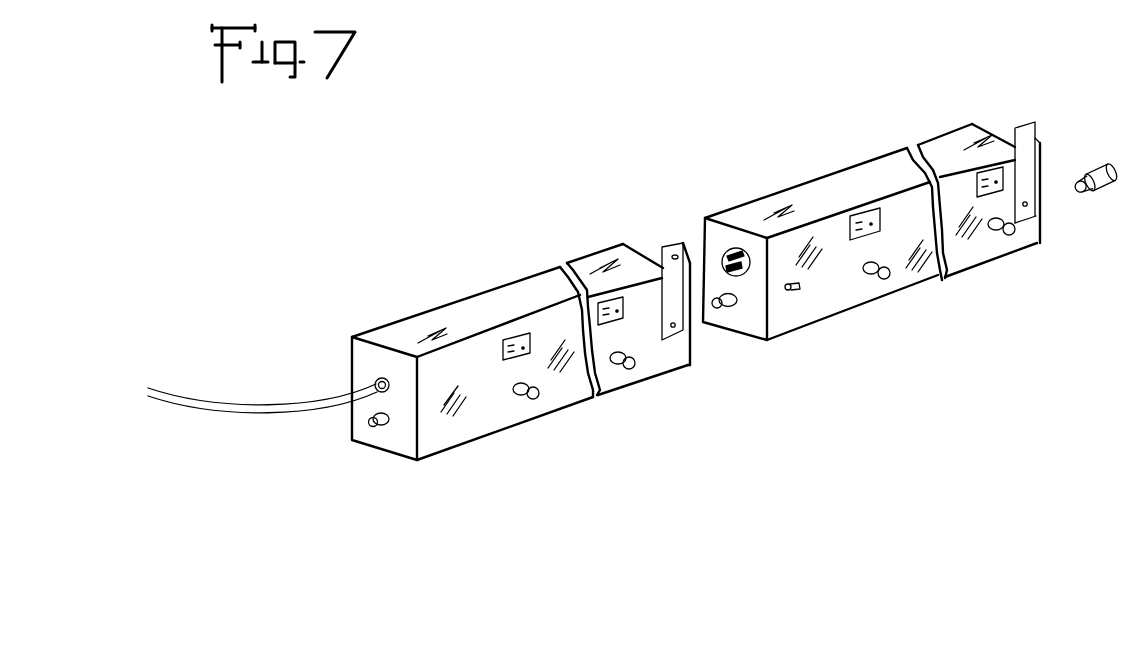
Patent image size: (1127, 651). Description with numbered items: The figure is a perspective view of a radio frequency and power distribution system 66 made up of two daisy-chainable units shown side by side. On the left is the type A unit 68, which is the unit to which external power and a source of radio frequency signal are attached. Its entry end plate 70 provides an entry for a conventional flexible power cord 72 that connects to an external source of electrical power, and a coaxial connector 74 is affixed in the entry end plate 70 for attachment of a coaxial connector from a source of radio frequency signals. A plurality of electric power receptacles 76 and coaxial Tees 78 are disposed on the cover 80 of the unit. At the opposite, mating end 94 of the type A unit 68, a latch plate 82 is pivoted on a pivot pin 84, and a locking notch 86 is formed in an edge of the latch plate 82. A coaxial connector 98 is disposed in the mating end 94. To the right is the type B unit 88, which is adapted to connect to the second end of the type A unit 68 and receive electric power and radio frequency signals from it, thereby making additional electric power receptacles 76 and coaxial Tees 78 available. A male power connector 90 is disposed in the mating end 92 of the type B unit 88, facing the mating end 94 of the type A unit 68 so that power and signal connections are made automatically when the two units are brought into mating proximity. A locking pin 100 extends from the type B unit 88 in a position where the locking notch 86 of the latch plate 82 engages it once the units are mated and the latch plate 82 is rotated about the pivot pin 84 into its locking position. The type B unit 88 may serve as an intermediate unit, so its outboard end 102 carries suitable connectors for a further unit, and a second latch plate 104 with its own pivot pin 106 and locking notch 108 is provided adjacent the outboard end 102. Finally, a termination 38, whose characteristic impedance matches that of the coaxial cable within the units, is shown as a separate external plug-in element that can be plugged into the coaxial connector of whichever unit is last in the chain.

The termination 38 is at (1106, 166).
The radio frequency and power distribution system 66 is at (679, 122).
The type A unit 68 is at (521, 321).
The entry end plate 70 is at (367, 353).
The flexible power cord 72 is at (238, 400).
The coaxial connector 74 is at (373, 426).
The electric power receptacles 76 is at (518, 337).
The coaxial Tees 78 is at (535, 398).
The cover 80 is at (477, 420).
The latch plate 82 is at (672, 275).
The pivot pin 84 is at (672, 330).
The locking notch 86 is at (682, 253).
The type B unit 88 is at (907, 224).
The male power connector 90 is at (733, 248).
The mating end 92 is at (757, 307).
The mating end 94 is at (643, 250).
The coaxial connector 98 is at (725, 310).
The locking pin 100 is at (800, 288).
The outboard end 102 is at (1040, 232).
The latch plate 104 is at (1020, 127).
The pivot pin 106 is at (1030, 207).
The locking notch 108 is at (1037, 137).